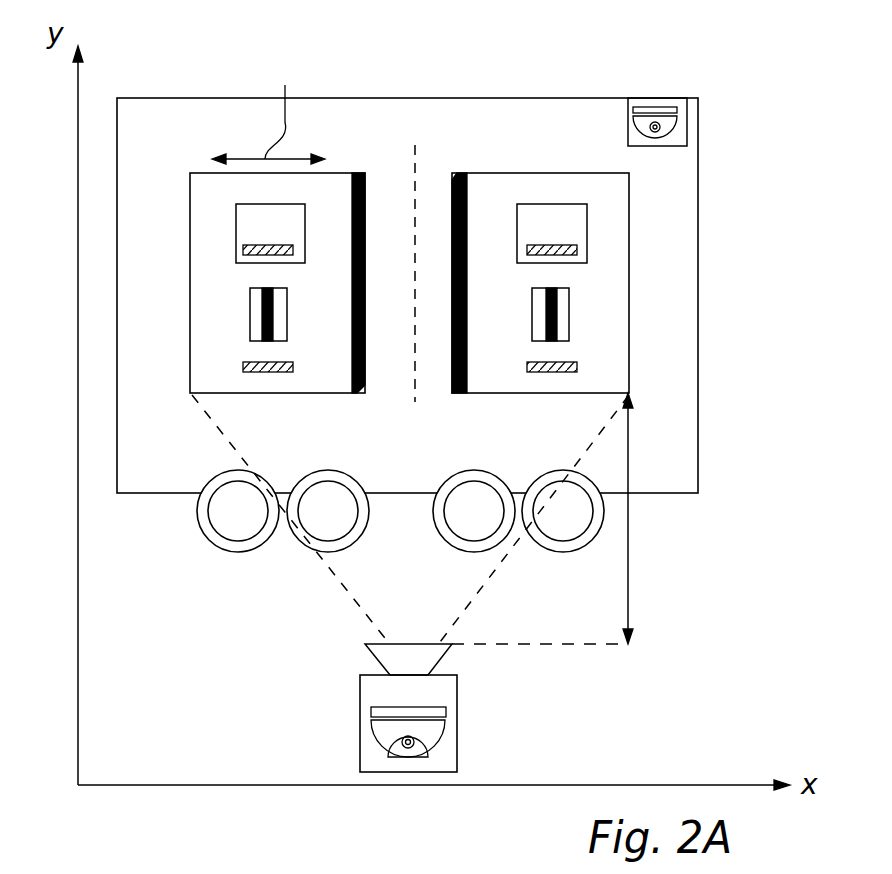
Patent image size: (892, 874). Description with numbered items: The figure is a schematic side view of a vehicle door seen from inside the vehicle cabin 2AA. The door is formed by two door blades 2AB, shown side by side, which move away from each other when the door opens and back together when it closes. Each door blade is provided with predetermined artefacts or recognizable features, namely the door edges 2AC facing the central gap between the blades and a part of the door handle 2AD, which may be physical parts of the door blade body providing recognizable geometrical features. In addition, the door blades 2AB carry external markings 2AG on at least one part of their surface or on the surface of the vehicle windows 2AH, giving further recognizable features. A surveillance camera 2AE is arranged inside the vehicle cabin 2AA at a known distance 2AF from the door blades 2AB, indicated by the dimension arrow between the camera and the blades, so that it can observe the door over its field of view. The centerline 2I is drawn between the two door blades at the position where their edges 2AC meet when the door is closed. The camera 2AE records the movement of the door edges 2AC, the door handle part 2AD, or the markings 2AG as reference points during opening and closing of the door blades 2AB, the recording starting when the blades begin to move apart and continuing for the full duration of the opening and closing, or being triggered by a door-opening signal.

The vehicle cabin 2AA is at (194, 83).
The door blades 2AB is at (190, 205).
The edges of door blades 2AC is at (462, 175).
The part of door handle 2AD is at (262, 318).
The surveillance camera 2AE is at (688, 128).
The known distance 2AF is at (632, 550).
The external markings 2AG is at (243, 250).
The vehicle windows 2AH is at (236, 222).
The optical axis 2I is at (415, 405).